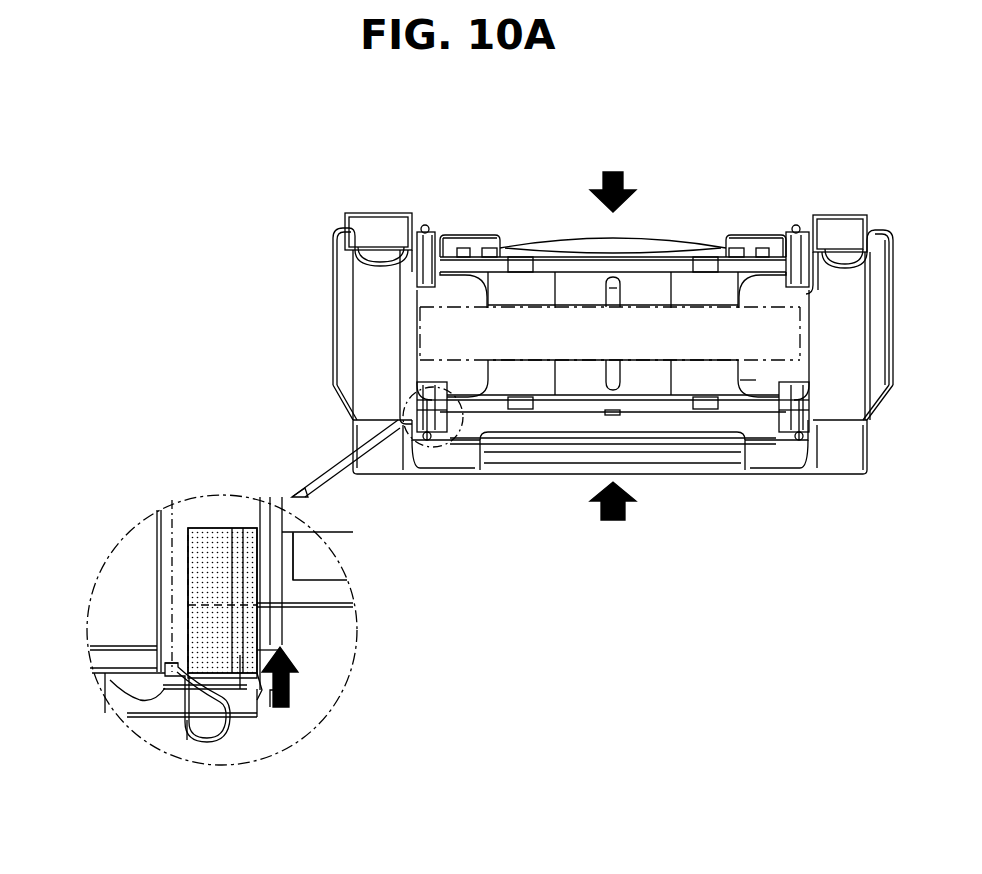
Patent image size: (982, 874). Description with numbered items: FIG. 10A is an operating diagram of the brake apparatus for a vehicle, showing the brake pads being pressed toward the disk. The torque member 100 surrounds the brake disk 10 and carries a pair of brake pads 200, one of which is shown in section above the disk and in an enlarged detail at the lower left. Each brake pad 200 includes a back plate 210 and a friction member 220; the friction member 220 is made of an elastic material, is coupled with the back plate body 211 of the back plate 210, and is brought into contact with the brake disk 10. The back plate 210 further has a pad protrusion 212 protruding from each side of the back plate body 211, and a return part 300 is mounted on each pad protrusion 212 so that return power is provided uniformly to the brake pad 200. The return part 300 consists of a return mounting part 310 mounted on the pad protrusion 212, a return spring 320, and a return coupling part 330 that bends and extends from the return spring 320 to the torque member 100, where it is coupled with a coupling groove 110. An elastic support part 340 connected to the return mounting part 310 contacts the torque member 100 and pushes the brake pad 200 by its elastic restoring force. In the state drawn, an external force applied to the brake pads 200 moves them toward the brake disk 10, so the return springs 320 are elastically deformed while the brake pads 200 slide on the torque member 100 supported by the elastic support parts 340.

The brake disk 10 is at (767, 283).
The torque member 100 is at (847, 297).
The coupling groove 110 is at (157, 666).
The brake pad 200 is at (545, 263).
The back plate 210 is at (700, 403).
The back plate body 211 is at (333, 588).
The pad protrusion 212 is at (260, 592).
The friction member 220 is at (738, 387).
The return part 300 is at (164, 687).
The return mounting part 310 is at (203, 530).
The return spring 320 is at (238, 698).
The return coupling part 330 is at (179, 663).
The elastic support part 340 is at (257, 690).